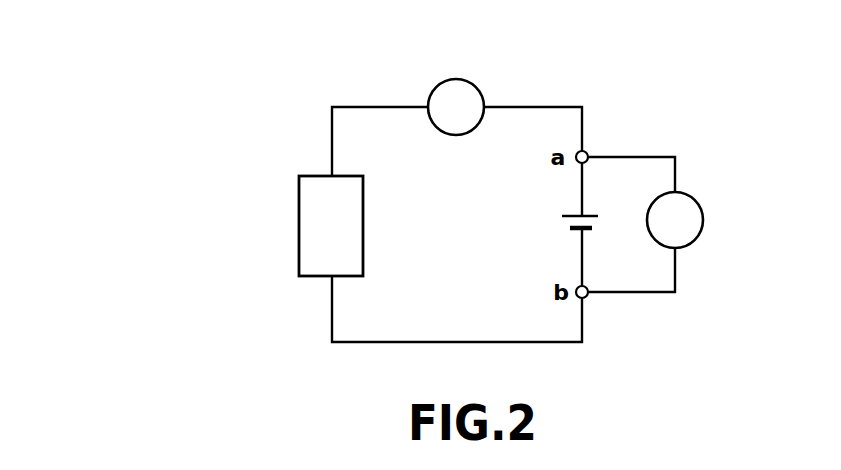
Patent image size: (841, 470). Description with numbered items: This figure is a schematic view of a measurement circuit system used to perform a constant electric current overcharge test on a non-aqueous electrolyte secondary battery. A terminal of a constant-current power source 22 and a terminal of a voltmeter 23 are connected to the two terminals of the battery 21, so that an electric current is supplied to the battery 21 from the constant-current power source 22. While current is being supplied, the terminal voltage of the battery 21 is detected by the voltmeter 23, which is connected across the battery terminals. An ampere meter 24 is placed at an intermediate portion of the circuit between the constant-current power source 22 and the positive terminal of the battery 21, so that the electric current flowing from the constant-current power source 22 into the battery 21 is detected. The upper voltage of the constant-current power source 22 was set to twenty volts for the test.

The battery 21 is at (567, 223).
The constant-current power source 22 is at (299, 210).
The voltmeter 23 is at (692, 194).
The ampere meter 24 is at (467, 78).